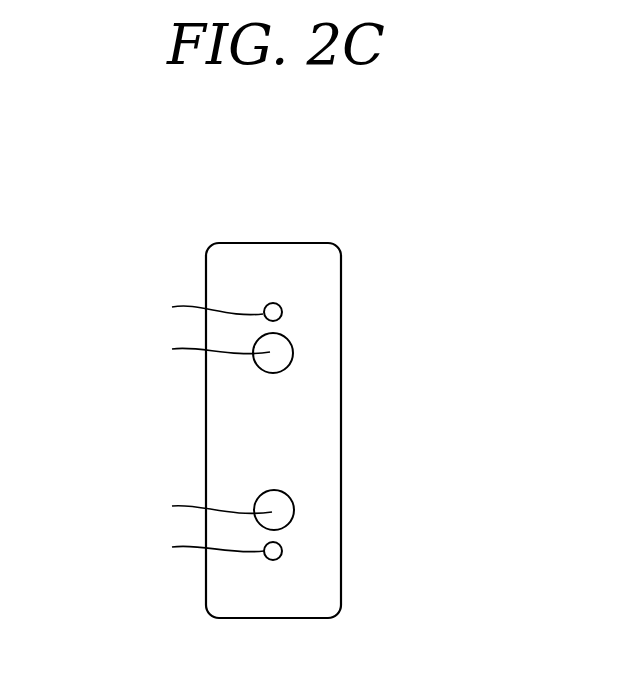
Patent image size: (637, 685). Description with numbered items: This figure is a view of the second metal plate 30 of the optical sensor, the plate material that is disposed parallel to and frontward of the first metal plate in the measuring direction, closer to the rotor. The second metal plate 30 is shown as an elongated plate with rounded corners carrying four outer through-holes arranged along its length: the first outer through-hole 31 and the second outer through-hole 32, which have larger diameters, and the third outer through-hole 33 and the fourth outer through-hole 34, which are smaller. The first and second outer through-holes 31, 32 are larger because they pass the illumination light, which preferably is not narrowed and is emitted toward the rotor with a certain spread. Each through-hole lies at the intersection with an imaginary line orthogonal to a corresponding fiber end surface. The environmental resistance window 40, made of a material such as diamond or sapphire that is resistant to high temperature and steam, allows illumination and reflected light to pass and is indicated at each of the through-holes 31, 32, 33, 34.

The second metal plate 30 is at (266, 265).
The first outer through-hole 31 is at (293, 352).
The second outer through-hole 32 is at (294, 507).
The third outer through-hole 33 is at (282, 312).
The fourth outer through-hole 34 is at (282, 551).
The environmental resistance window 40 is at (205, 428).